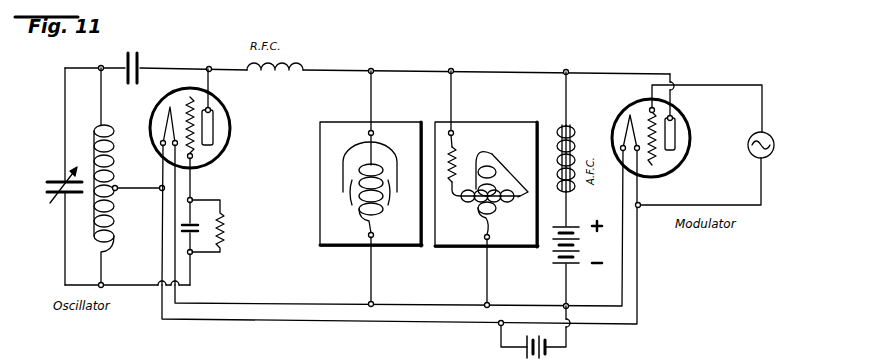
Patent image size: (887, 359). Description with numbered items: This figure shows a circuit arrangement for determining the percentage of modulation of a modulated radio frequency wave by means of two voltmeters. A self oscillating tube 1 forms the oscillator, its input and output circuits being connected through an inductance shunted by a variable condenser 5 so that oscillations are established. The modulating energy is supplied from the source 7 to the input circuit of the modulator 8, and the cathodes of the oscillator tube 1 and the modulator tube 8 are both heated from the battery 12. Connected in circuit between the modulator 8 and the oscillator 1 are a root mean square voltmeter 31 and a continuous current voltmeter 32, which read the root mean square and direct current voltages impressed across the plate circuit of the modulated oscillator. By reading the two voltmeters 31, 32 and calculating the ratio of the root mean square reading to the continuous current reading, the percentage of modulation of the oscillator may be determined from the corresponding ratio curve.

The self oscillating tube 1 is at (248, 107).
The variable condenser 5 is at (53, 173).
The source 7 is at (778, 137).
The modulator tube 8 is at (692, 148).
The battery 12 is at (500, 350).
The root mean square voltmeter 31 is at (476, 130).
The continuous current voltmeter 32 is at (385, 128).